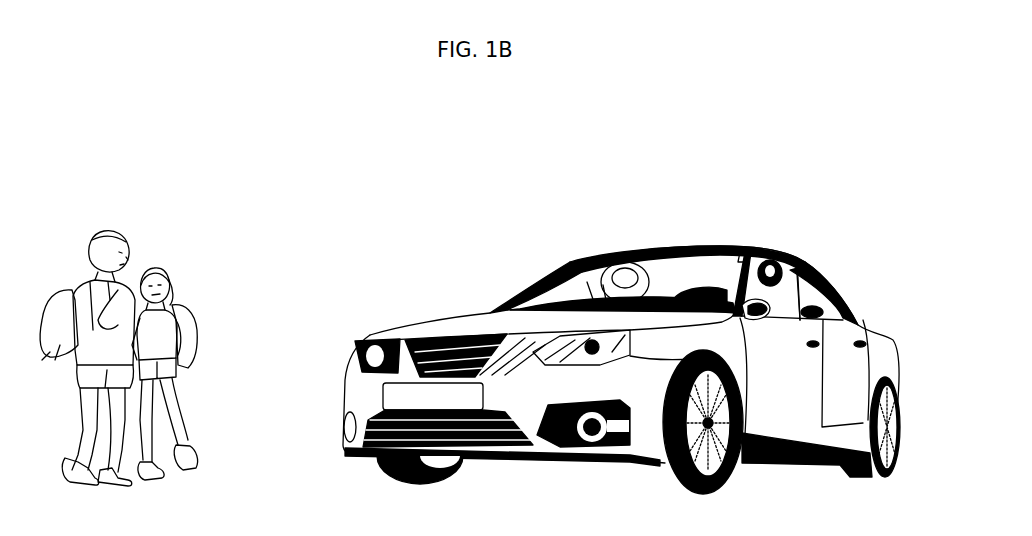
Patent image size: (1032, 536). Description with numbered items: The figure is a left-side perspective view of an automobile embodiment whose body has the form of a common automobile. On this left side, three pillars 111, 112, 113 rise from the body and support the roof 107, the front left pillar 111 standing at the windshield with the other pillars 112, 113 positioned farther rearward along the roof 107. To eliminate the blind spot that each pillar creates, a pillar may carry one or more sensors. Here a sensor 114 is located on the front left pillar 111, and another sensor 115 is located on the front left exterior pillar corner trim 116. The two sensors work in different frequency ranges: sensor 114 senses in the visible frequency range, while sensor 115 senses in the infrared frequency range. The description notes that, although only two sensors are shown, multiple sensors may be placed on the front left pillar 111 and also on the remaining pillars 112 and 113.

The roof 107 is at (630, 249).
The front left pillar 111 is at (740, 252).
The sensor 114 is at (747, 250).
The pillar 112 is at (797, 305).
The pillar 113 is at (837, 285).
The sensor 115 is at (741, 306).
The front left exterior pillar corner trim 116 is at (807, 344).